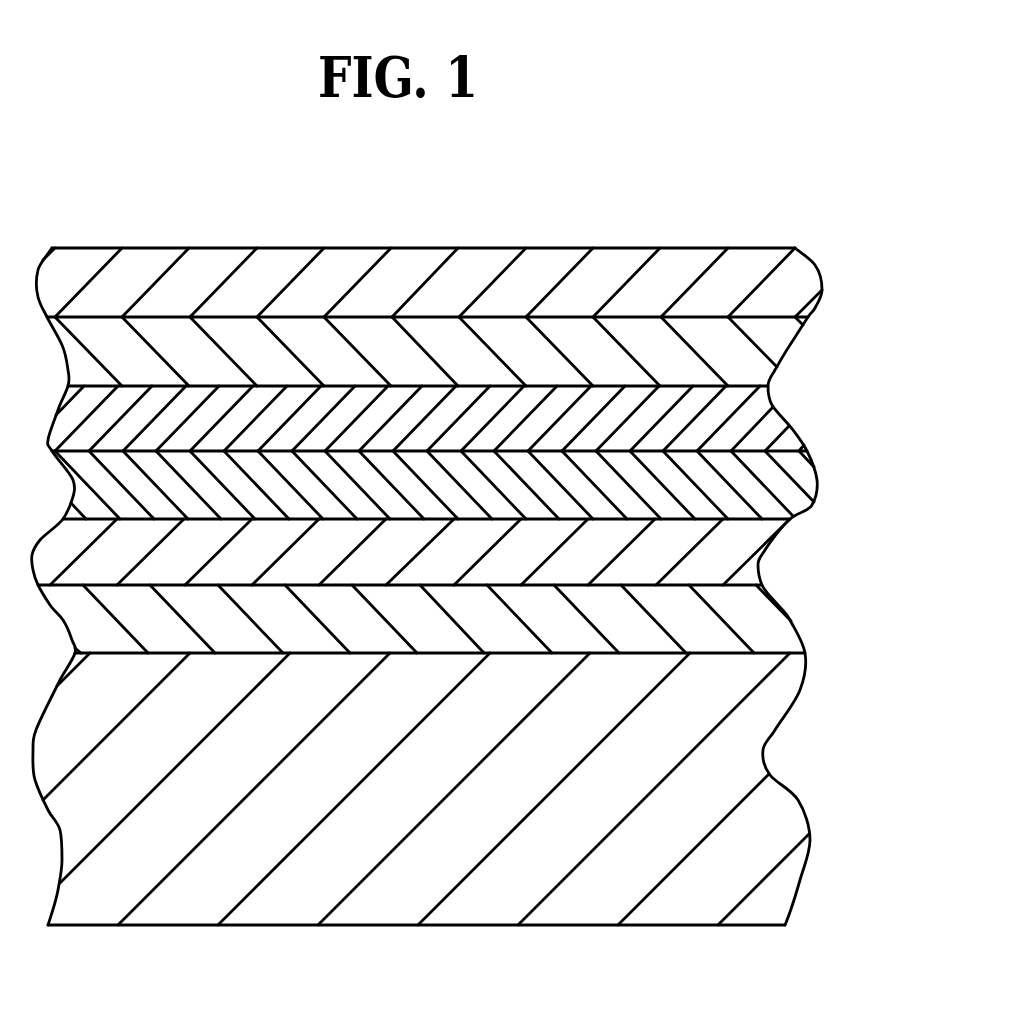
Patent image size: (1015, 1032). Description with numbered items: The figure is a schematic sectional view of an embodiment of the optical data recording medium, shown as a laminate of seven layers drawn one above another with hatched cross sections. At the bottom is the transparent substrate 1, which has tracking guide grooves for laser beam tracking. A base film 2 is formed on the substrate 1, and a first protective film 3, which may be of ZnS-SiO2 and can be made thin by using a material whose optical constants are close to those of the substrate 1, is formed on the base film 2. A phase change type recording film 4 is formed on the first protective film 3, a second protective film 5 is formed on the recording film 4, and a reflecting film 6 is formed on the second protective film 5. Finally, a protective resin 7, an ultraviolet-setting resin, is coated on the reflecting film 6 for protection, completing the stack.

The substrate 1 is at (807, 817).
The base film 2 is at (803, 640).
The first protective film 3 is at (762, 560).
The recording film 4 is at (813, 490).
The second protective film 5 is at (793, 423).
The reflecting film 6 is at (780, 360).
The protective resin 7 is at (822, 290).